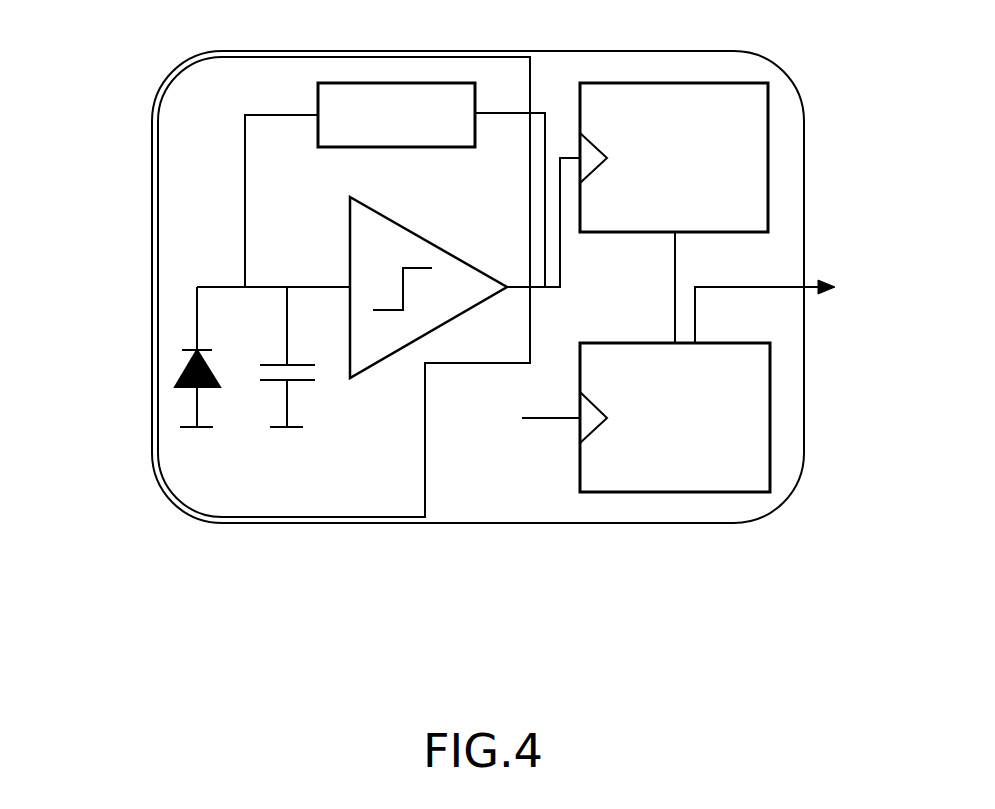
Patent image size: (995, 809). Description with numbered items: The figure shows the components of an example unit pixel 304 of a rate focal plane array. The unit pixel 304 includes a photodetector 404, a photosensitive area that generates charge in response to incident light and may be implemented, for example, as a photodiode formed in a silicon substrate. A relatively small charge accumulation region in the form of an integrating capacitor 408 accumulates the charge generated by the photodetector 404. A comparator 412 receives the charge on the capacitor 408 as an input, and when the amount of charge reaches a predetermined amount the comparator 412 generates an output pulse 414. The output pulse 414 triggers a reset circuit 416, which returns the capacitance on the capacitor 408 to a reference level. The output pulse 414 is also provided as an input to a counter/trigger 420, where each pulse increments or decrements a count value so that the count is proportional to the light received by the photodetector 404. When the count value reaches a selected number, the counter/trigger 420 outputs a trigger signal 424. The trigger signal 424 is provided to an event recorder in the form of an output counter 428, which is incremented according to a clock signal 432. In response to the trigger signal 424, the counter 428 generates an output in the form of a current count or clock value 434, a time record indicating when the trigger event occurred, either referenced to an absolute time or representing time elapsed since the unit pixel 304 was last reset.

The unit pixel 304 is at (130, 320).
The photodetector 404 is at (178, 380).
The integrating capacitor 408 is at (263, 382).
The comparator 412 is at (377, 362).
The output pulse 414 is at (530, 284).
The reset circuit 416 is at (318, 96).
The counter/trigger 420 is at (768, 165).
The trigger signal 424 is at (675, 305).
The output counter 428 is at (662, 492).
The clock signal 432 is at (543, 425).
The count value 434 is at (790, 285).